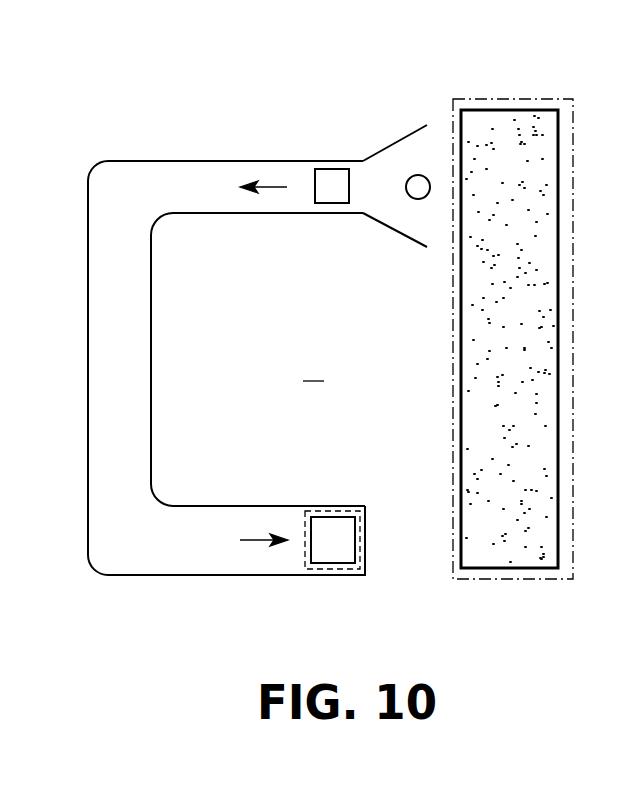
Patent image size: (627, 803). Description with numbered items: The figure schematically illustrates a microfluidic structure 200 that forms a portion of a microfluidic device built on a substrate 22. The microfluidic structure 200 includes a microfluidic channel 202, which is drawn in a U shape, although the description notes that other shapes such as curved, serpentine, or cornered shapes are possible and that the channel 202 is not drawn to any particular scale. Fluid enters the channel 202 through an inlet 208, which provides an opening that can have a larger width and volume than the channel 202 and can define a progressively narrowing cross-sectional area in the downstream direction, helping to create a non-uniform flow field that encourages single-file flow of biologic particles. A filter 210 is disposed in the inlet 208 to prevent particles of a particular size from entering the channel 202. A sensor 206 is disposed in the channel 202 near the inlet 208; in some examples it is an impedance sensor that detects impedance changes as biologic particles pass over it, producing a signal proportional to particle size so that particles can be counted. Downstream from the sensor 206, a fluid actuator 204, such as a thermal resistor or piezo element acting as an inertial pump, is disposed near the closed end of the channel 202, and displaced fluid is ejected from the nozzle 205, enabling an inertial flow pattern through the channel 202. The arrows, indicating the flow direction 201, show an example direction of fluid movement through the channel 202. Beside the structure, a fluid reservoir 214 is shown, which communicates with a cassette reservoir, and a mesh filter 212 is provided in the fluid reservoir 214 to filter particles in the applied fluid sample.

The microfluidic structure 200 is at (208, 113).
The fluid flow direction 201 is at (151, 268).
The microfluidic channel 202 is at (152, 360).
The fluid actuator 204 is at (331, 517).
The nozzle 205 is at (327, 569).
The sensor 206 is at (330, 169).
The inlet 208 is at (390, 230).
The filter 210 is at (418, 175).
The mesh filter 212 is at (493, 110).
The fluid reservoir 214 is at (537, 99).
The substrate 22 is at (313, 366).